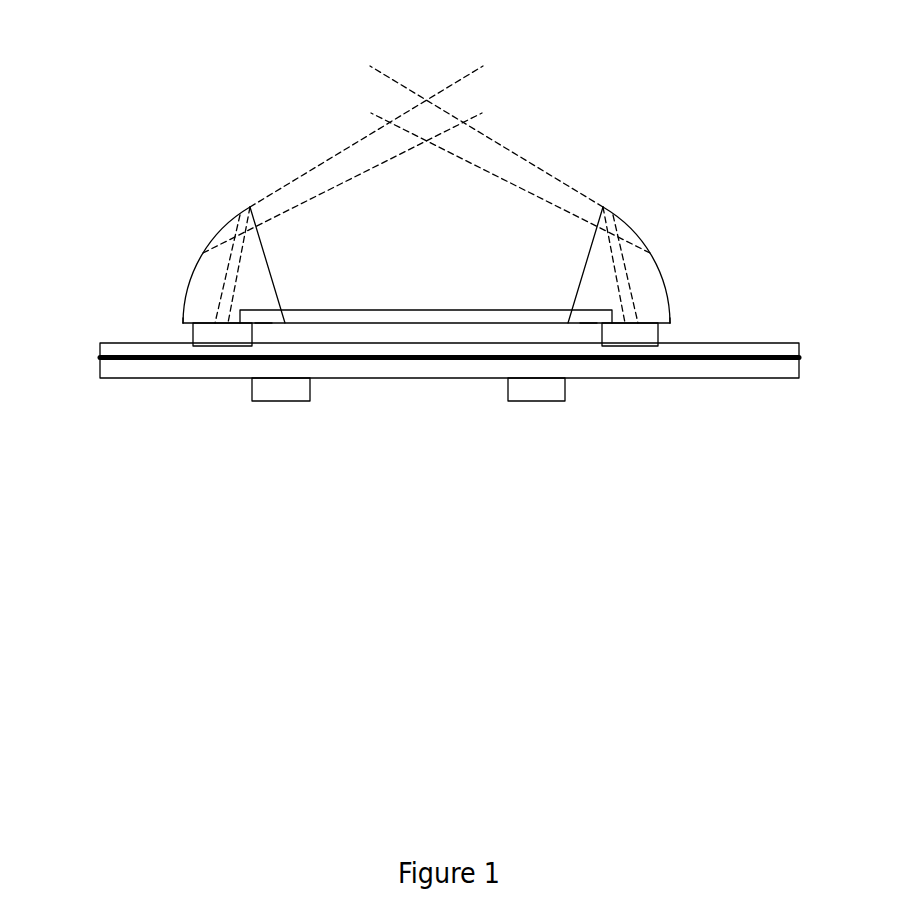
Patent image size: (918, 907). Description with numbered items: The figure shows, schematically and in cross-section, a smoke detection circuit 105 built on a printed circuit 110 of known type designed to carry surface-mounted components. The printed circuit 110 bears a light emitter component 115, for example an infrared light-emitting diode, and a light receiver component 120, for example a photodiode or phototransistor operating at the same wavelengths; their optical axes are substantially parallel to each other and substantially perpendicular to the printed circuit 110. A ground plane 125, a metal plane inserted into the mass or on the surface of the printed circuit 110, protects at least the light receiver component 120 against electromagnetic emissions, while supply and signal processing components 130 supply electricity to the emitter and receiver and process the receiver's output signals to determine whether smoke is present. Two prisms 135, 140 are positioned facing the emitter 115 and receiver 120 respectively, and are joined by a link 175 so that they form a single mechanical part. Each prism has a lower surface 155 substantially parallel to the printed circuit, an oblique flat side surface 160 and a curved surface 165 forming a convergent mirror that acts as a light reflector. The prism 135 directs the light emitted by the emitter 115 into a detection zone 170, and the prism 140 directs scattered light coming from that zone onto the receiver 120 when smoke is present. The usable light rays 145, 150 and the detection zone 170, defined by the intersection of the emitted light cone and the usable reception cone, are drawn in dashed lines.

The smoke detection circuit 105 is at (392, 603).
The printed circuit 110 is at (752, 368).
The light emitter component 115 is at (205, 333).
The light receiver component 120 is at (635, 333).
The ground plane 125 is at (332, 360).
The supply and signal processing components 130 is at (285, 390).
The prism 135 is at (193, 300).
The prism 140 is at (658, 305).
The light ray 145 is at (333, 158).
The light ray 150 is at (355, 178).
The lower surface 155 is at (263, 320).
The oblique flat side surface 160 is at (240, 215).
The curved surface 165 is at (193, 265).
The detection zone 170 is at (415, 123).
The link 175 is at (415, 315).